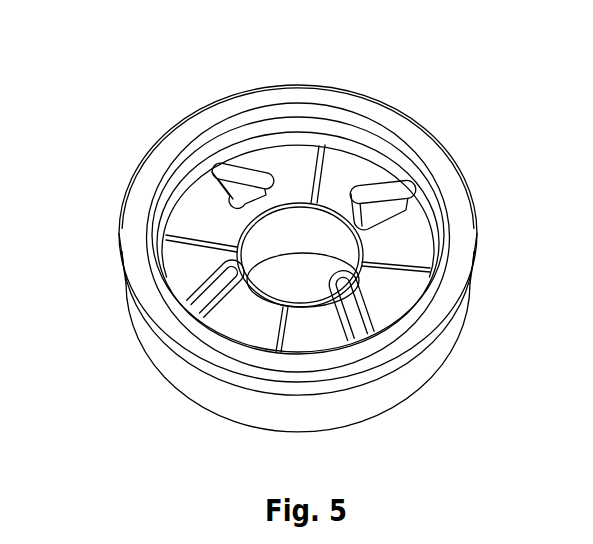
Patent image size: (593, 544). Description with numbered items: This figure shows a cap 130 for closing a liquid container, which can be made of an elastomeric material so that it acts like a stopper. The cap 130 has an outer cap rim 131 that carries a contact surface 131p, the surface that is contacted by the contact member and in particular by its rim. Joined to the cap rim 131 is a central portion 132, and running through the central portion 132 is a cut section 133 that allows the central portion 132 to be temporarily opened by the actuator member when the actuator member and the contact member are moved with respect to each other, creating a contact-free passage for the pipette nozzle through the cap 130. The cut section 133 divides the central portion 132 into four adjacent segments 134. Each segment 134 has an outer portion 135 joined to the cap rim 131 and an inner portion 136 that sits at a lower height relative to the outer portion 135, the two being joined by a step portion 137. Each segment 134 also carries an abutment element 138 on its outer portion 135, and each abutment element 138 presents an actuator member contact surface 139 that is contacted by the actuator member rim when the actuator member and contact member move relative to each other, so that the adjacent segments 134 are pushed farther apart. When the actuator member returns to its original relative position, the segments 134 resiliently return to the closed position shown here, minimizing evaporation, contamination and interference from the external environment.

The cap 130 is at (222, 100).
The outer cap rim 131 is at (356, 106).
The contact surface 131p is at (298, 234).
The central portion 132 is at (367, 170).
The cut section 133 is at (306, 305).
The segment 134 is at (385, 292).
The outer portion 135 is at (203, 215).
The inner portion 136 is at (272, 282).
The step portion 137 is at (275, 238).
The abutment element 138 is at (243, 290).
The actuator member contact surface 139 is at (213, 290).